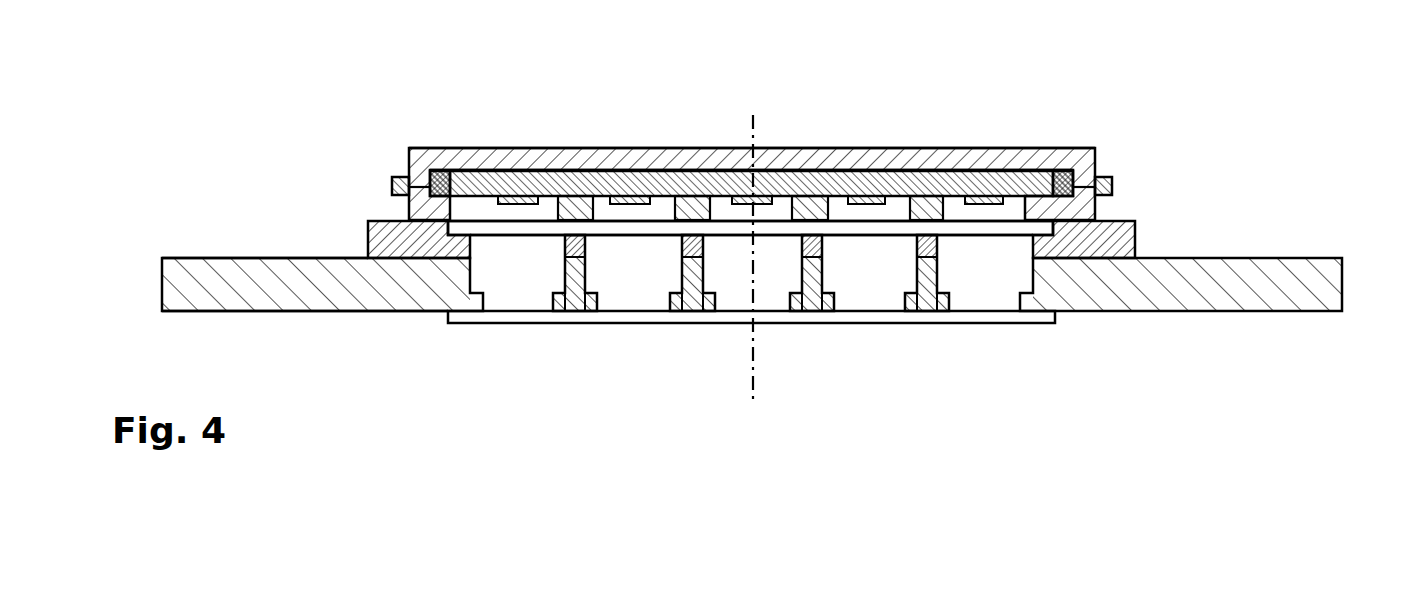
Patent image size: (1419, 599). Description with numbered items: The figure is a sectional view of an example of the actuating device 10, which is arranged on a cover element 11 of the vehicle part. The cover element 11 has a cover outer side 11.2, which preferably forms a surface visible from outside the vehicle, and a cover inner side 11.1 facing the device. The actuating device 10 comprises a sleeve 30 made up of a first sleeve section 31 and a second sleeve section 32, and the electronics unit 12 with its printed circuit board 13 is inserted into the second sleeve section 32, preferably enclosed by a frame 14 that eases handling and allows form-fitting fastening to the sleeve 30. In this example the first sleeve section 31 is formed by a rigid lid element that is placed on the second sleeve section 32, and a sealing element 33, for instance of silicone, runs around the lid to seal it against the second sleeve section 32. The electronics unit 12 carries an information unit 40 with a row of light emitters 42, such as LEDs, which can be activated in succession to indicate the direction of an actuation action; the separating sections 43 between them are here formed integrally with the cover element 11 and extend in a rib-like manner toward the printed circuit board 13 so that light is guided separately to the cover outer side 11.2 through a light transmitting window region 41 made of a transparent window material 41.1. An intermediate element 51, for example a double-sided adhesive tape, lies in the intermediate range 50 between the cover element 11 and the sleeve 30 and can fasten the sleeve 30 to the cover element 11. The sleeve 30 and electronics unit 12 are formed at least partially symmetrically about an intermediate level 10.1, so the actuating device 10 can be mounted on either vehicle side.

The actuating device 10 is at (363, 115).
The intermediate level 10.1 is at (753, 362).
The cover element 11 is at (1308, 288).
The cover inner side 11.1 is at (325, 226).
The cover outer side 11.2 is at (327, 346).
The electronics unit 12 is at (539, 143).
The printed circuit board 13 is at (843, 182).
The frame 14 is at (440, 172).
The sleeve 30 is at (1132, 151).
The first sleeve section 31 is at (592, 157).
The second sleeve section 32 is at (1085, 203).
The sealing element 33 is at (1112, 186).
The information unit 40 is at (461, 209).
The window region 41 is at (1030, 350).
The transparent window material 41.1 is at (1045, 232).
The light emitters 42 is at (612, 203).
The separating sections 43 is at (686, 305).
The intermediate range 50 is at (1240, 246).
The intermediate element 51 is at (1105, 248).